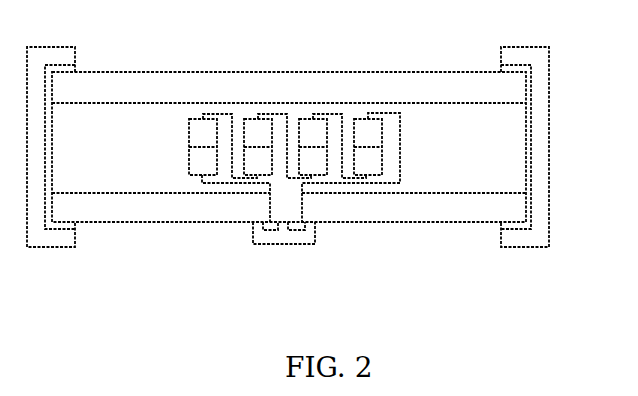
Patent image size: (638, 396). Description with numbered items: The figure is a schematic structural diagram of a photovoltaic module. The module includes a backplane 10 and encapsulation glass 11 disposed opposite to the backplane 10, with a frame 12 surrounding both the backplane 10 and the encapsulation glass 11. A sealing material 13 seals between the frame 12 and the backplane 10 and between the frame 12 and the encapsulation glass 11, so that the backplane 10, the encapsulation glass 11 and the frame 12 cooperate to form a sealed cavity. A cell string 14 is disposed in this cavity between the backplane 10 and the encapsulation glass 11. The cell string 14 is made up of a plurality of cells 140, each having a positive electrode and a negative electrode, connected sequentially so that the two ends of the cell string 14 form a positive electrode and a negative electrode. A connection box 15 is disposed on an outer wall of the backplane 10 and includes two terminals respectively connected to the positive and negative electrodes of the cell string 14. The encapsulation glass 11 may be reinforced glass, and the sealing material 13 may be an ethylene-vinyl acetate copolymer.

The backplane 10 is at (163, 213).
The encapsulation glass 11 is at (223, 80).
The frame 12 is at (56, 53).
The sealing material 13 is at (75, 64).
The cell string 14 is at (373, 115).
The cell 140 is at (307, 119).
The connection box 15 is at (312, 244).